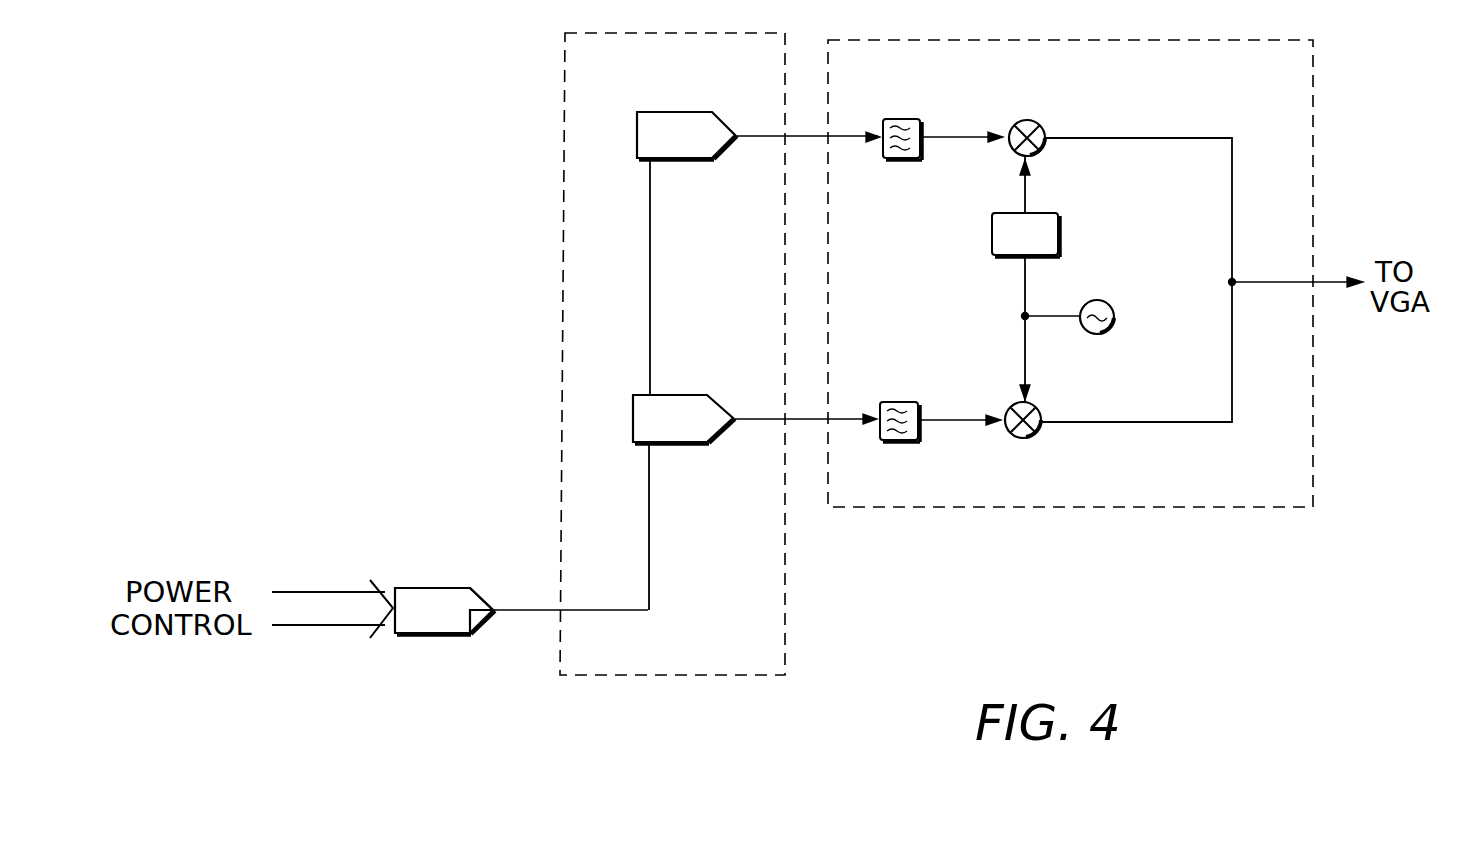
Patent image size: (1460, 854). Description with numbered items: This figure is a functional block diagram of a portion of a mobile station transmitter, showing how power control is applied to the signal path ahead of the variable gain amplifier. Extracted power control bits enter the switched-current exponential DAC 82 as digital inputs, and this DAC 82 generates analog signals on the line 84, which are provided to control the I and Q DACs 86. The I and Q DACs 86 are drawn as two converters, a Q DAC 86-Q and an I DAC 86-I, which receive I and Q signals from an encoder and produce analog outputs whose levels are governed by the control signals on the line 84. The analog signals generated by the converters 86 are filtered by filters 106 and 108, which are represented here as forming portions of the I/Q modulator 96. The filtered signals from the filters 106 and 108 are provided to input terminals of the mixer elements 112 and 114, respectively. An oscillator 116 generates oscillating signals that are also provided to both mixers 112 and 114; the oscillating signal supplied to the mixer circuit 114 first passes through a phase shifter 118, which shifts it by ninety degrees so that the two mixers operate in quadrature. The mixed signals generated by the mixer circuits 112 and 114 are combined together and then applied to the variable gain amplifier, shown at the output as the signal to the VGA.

The switched-current exponential DAC 82 is at (440, 560).
The line 84 is at (650, 272).
The I and Q DACs 86 is at (684, 33).
The Q DAC 86-Q is at (645, 112).
The I DAC 86-I is at (668, 443).
The I/Q modulator 96 is at (1140, 40).
The filter 106 is at (902, 375).
The filter 108 is at (905, 92).
The mixer element 112 is at (1020, 438).
The mixer element 114 is at (1026, 93).
The oscillator 116 is at (1114, 316).
The phase shifter 118 is at (1058, 236).